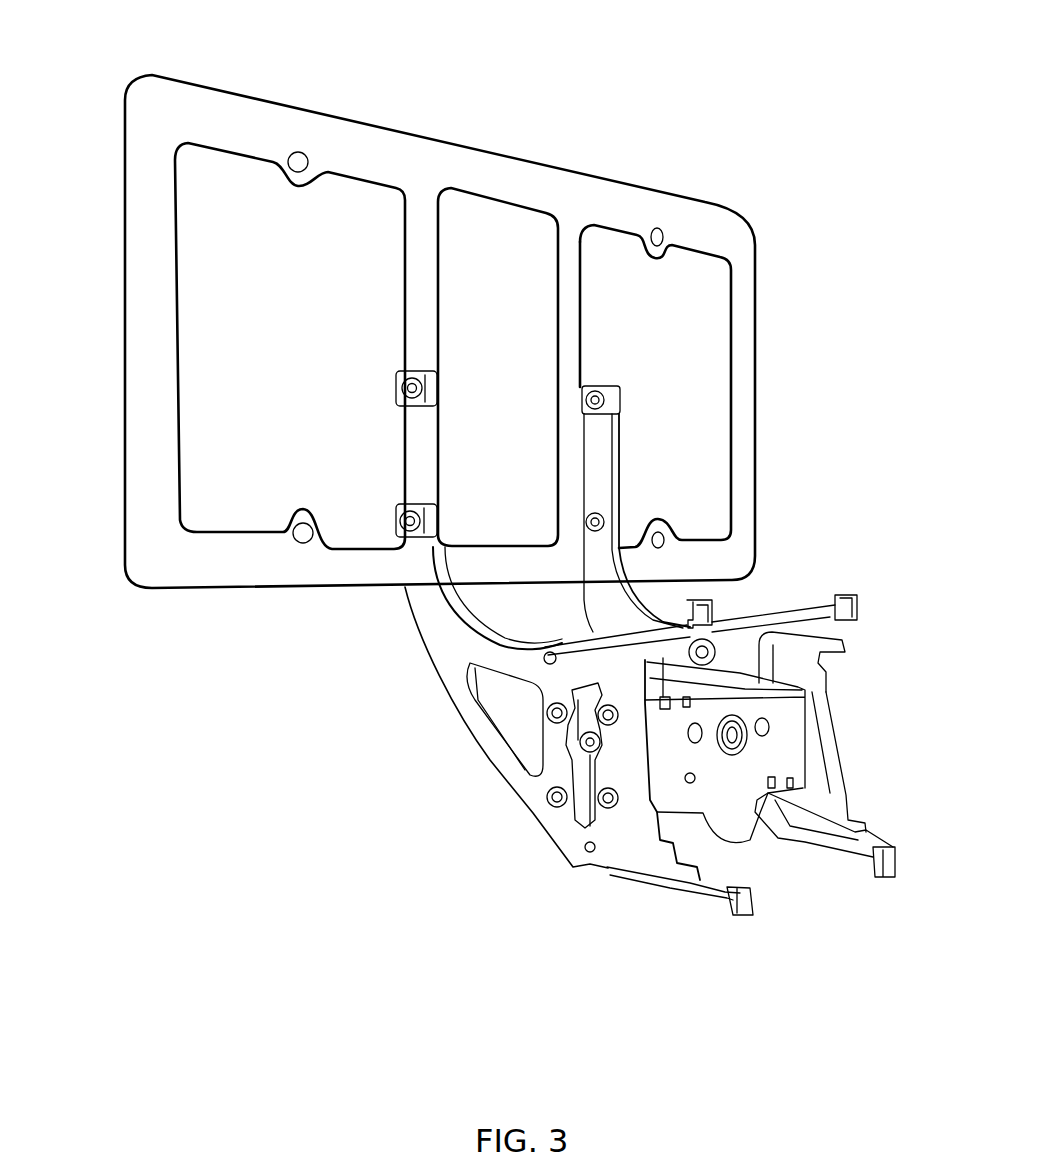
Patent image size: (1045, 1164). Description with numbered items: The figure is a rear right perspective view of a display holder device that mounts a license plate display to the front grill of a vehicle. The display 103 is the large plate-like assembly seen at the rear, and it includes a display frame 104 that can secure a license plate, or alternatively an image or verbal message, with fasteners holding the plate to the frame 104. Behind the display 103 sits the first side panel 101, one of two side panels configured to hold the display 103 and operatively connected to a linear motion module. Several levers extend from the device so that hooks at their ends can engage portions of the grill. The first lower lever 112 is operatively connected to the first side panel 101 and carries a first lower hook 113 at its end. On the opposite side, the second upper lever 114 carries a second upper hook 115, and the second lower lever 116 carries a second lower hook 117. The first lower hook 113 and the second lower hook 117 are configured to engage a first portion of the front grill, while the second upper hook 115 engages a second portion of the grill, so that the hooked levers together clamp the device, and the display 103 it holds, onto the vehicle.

The first side panel 101 is at (472, 716).
The display 103 is at (424, 208).
The display frame 104 is at (117, 89).
The first lower lever 112 is at (675, 884).
The first lower hook 113 is at (742, 893).
The second upper lever 114 is at (776, 633).
The second upper hook 115 is at (847, 597).
The second lower lever 116 is at (828, 848).
The second lower hook 117 is at (890, 862).